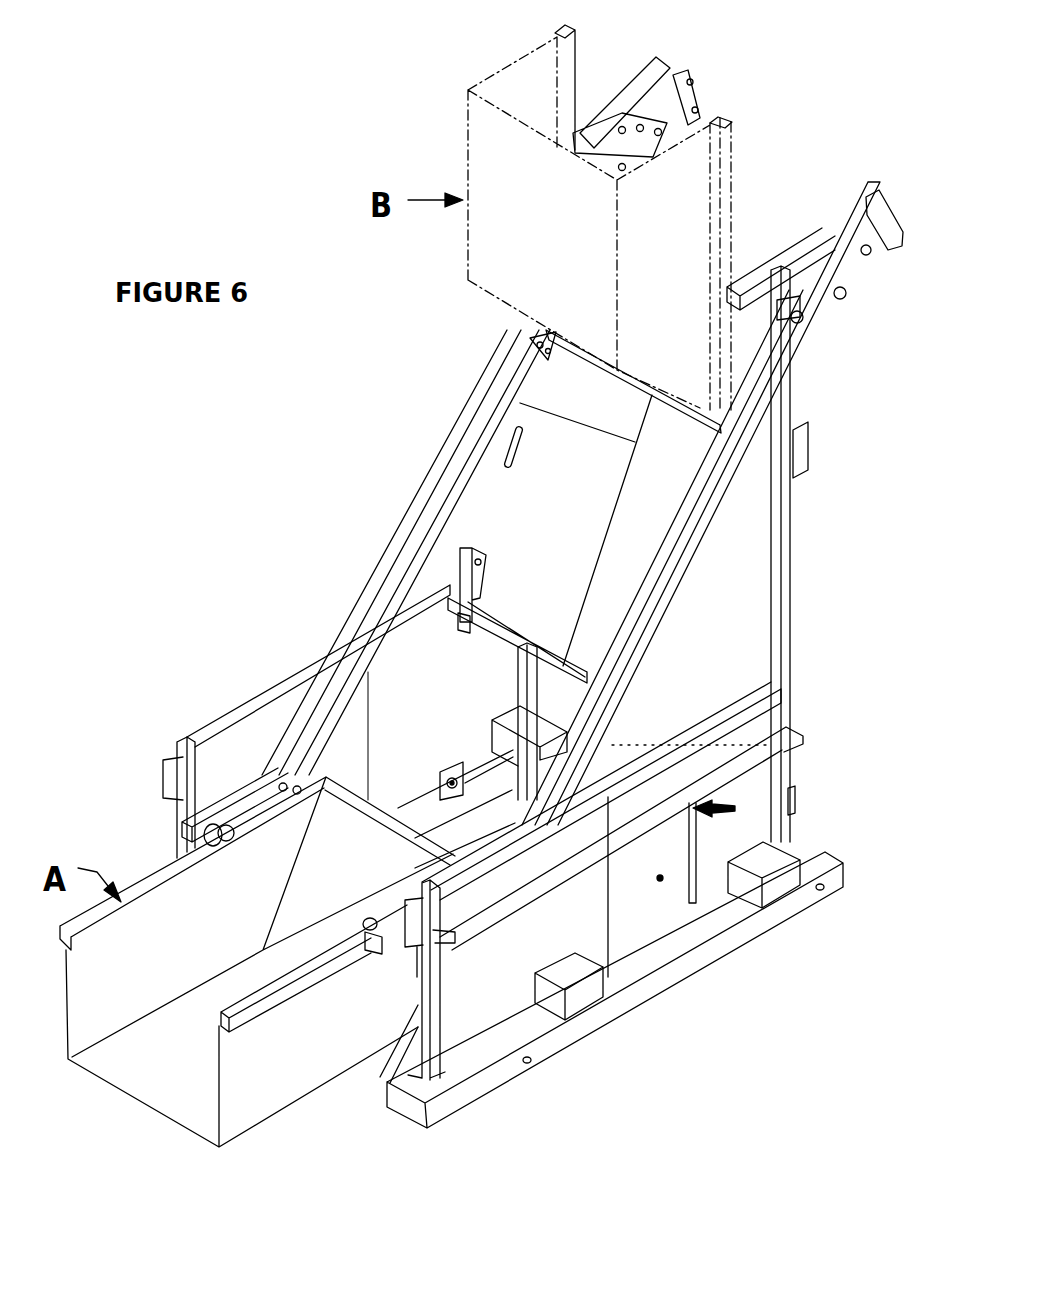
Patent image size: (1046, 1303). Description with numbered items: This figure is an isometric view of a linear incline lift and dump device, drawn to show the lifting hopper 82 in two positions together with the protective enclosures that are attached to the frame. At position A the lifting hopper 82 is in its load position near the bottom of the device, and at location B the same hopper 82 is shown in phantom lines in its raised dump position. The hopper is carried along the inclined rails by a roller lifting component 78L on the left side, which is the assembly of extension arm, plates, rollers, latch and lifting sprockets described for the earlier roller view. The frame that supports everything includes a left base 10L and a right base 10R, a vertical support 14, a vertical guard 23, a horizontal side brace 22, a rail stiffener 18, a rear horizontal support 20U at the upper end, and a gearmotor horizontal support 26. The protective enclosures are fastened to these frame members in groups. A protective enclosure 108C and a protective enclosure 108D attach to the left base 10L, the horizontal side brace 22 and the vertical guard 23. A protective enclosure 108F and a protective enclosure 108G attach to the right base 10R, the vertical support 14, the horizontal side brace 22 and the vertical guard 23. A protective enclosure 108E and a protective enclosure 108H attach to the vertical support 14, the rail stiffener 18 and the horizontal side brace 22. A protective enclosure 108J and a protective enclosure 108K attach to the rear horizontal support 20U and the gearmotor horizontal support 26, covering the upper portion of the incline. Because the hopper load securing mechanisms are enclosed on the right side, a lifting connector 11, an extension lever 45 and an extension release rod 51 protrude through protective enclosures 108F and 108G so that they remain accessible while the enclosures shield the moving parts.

The lifting hopper 82 is at (487, 255).
The rear horizontal support 20U is at (708, 410).
The rail stiffener 18 is at (378, 573).
The protective enclosure 108K is at (667, 457).
The protective enclosure 108J is at (513, 498).
The protective enclosure 108E is at (445, 552).
The protective enclosure 108D is at (408, 675).
The protective enclosure 108C is at (235, 750).
The protective enclosure 108H is at (726, 626).
The horizontal side brace 22 is at (267, 688).
The gearmotor horizontal support 26 is at (500, 635).
The roller lifting component 78L is at (250, 791).
The vertical guard 23 is at (177, 812).
The base 10L is at (418, 810).
The vertical support 14 is at (795, 757).
The extension lever 45 is at (735, 808).
The extension release rod 51 is at (660, 878).
The lifting connector 11 is at (765, 860).
The protective enclosure 108G is at (710, 880).
The protective enclosure 108F is at (480, 977).
The base 10R is at (458, 1098).